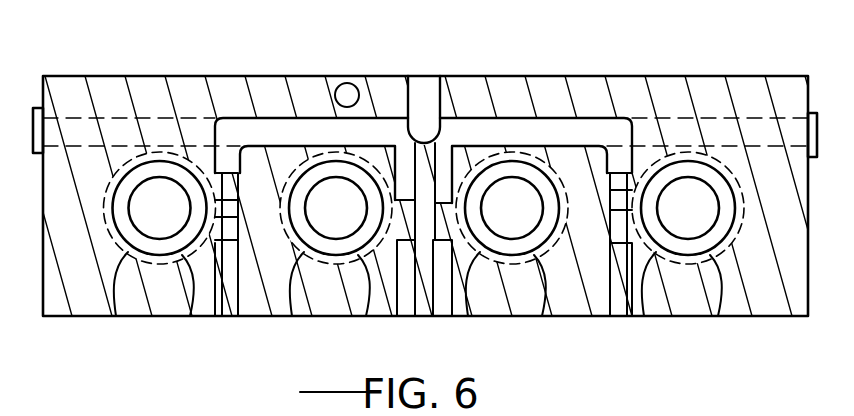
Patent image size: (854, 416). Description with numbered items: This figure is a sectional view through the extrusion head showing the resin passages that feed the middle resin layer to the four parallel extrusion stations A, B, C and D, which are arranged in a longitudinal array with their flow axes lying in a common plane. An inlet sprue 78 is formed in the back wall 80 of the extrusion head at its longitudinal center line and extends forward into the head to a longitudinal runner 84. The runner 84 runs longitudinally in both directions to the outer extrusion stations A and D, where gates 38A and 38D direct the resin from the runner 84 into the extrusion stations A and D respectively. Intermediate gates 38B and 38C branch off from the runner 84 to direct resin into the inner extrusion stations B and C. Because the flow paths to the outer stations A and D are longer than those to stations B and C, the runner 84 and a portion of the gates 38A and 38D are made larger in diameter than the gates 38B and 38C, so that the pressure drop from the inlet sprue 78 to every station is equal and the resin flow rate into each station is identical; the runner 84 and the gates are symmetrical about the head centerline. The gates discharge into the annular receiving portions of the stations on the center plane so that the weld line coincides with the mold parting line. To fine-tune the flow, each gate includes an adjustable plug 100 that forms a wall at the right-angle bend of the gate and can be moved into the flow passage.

The gate 38A is at (668, 145).
The intermediate gate 38B is at (480, 150).
The intermediate gate 38C is at (378, 150).
The gate 38D is at (214, 128).
The longitudinal runner 84 is at (276, 118).
The back wall 80 is at (642, 158).
The inlet sprue 78 is at (442, 118).
The adjustable plug 100 is at (183, 316).
The extrusion station A is at (725, 316).
The extrusion station B is at (527, 316).
The extrusion station C is at (281, 316).
The extrusion station D is at (120, 316).